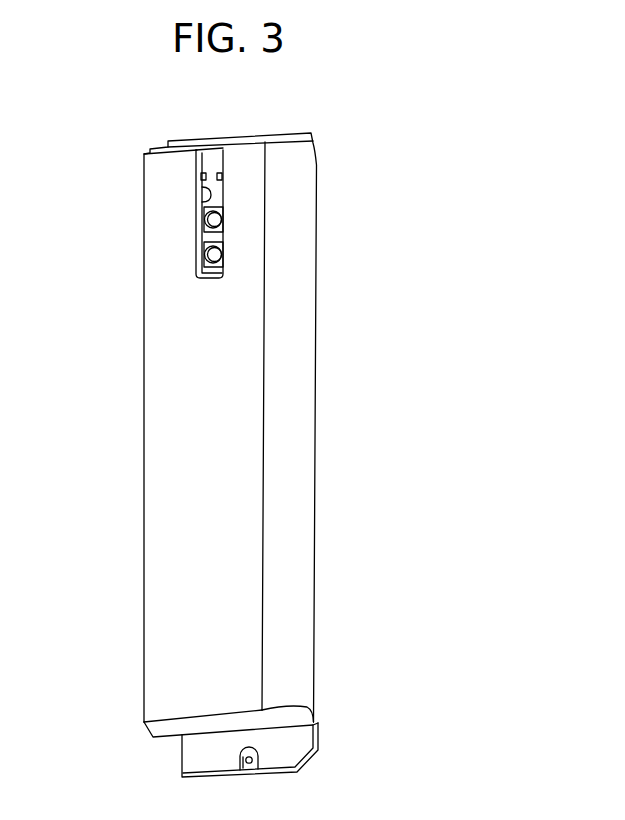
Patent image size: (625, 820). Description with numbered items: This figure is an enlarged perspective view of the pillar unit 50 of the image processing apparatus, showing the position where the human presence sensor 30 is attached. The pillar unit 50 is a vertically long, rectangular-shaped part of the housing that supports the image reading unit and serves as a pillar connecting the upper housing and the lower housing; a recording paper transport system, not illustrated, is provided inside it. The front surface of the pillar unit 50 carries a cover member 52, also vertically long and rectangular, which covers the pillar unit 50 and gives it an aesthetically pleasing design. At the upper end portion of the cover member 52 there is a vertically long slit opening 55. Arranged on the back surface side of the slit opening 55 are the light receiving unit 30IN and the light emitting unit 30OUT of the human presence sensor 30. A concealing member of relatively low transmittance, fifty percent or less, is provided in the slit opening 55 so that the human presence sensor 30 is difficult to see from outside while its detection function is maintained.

The pillar unit 50 is at (324, 163).
The cover member 52 is at (160, 337).
The slit opening 55 is at (267, 213).
The human presence sensor 30 is at (345, 242).
The light receiving unit 30IN is at (217, 221).
The light emitting unit 30OUT is at (217, 257).